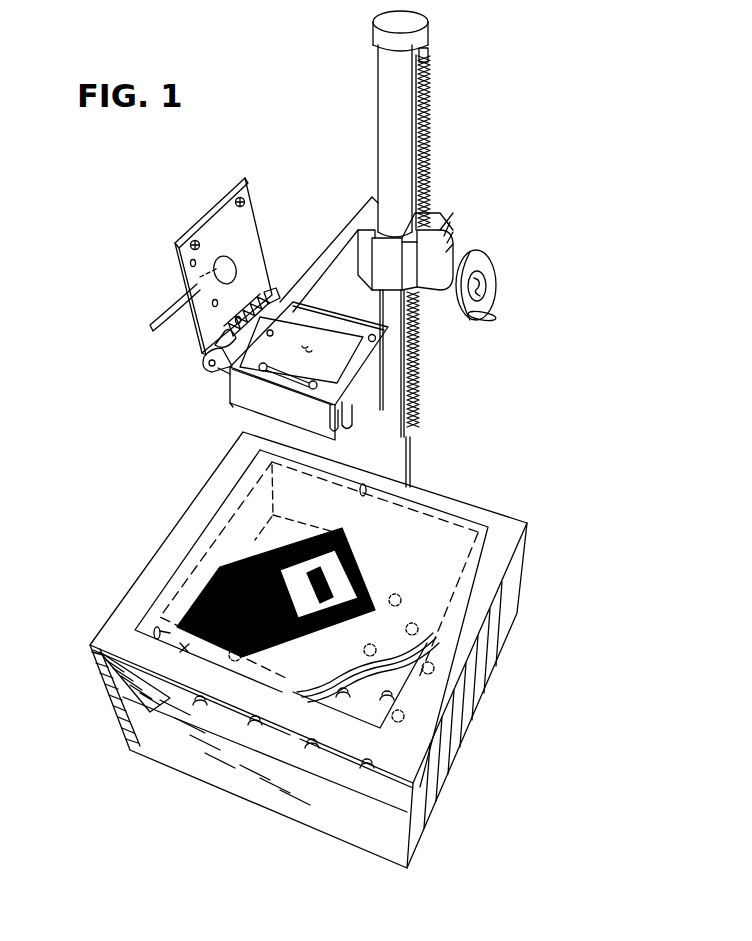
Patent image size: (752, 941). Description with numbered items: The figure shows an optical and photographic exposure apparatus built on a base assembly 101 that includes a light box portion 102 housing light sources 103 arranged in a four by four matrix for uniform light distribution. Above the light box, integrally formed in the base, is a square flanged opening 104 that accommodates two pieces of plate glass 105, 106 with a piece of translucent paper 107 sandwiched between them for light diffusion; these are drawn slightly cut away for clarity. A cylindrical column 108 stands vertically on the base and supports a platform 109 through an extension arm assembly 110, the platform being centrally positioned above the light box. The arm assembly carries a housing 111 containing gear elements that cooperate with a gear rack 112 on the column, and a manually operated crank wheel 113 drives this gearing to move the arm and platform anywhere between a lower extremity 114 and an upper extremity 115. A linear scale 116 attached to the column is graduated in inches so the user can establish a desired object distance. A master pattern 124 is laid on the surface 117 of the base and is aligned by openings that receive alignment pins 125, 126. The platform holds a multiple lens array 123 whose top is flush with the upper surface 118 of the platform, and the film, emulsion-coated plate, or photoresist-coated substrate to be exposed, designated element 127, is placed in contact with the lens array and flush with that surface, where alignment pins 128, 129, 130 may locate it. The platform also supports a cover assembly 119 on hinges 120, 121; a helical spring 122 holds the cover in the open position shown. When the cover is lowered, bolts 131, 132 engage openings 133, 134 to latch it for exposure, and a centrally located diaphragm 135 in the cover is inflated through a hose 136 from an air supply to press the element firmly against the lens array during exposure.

The base assembly 101 is at (505, 623).
The light box portion 102 is at (332, 780).
The light sources 103 is at (352, 693).
The square flanged opening 104 is at (400, 688).
The plate glass 105 is at (297, 693).
The plate glass 106 is at (318, 702).
The translucent paper 107 is at (302, 697).
The cylindrical column 108 is at (394, 466).
The platform 109 is at (232, 404).
The extension arm assembly 110 is at (360, 217).
The housing 111 is at (452, 237).
The gear rack 112 is at (430, 160).
The crank wheel 113 is at (489, 272).
The lower extremity 114 is at (421, 430).
The upper extremity 115 is at (429, 53).
The linear scale 116 is at (412, 98).
The surface 117 is at (490, 577).
The upper surface 118 is at (328, 318).
The cover assembly 119 is at (248, 222).
The hinge 120 is at (203, 364).
The hinge 121 is at (273, 290).
The helical spring 122 is at (254, 306).
The multiple lens array 123 is at (312, 349).
The master pattern 124 is at (480, 540).
The alignment pin 125 is at (372, 490).
The alignment pin 126 is at (148, 631).
The element 127 is at (333, 440).
The alignment pin 128 is at (231, 372).
The alignment pin 129 is at (259, 370).
The alignment pin 130 is at (252, 402).
The bolt 131 is at (234, 196).
The bolt 132 is at (182, 243).
The opening 133 is at (377, 341).
The opening 134 is at (348, 424).
The diaphragm 135 is at (237, 263).
The hose 136 is at (167, 302).